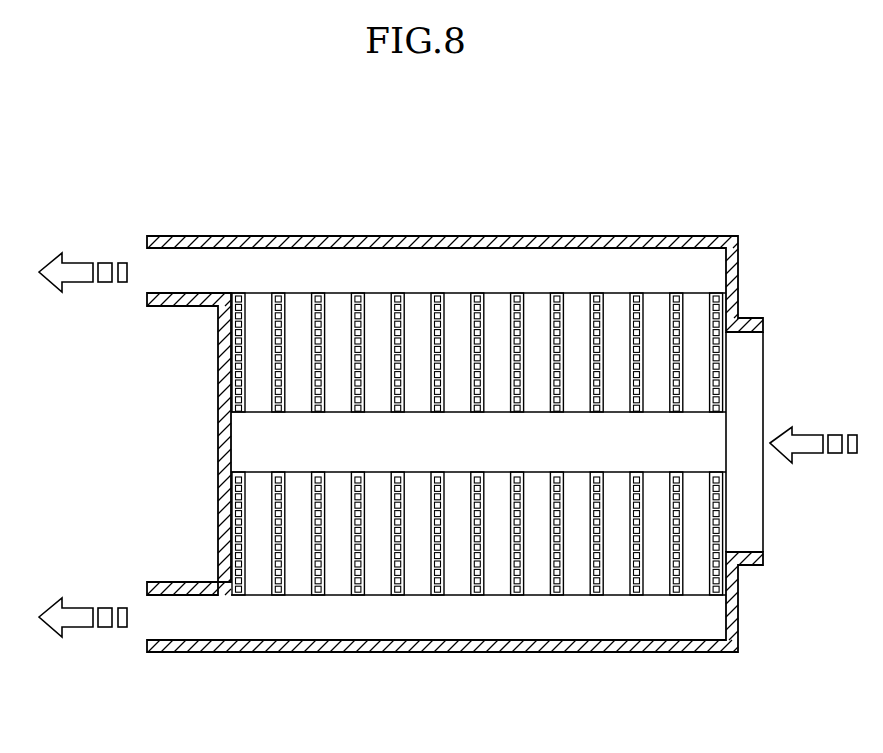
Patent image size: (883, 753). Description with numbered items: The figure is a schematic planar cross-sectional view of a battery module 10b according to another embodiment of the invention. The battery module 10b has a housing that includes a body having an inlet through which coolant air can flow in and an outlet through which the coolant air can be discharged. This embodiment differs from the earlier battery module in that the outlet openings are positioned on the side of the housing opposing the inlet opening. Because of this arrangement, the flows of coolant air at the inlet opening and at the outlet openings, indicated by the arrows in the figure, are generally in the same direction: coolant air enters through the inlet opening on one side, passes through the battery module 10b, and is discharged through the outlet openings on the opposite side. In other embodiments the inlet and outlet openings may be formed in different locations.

The battery module 10b is at (452, 178).